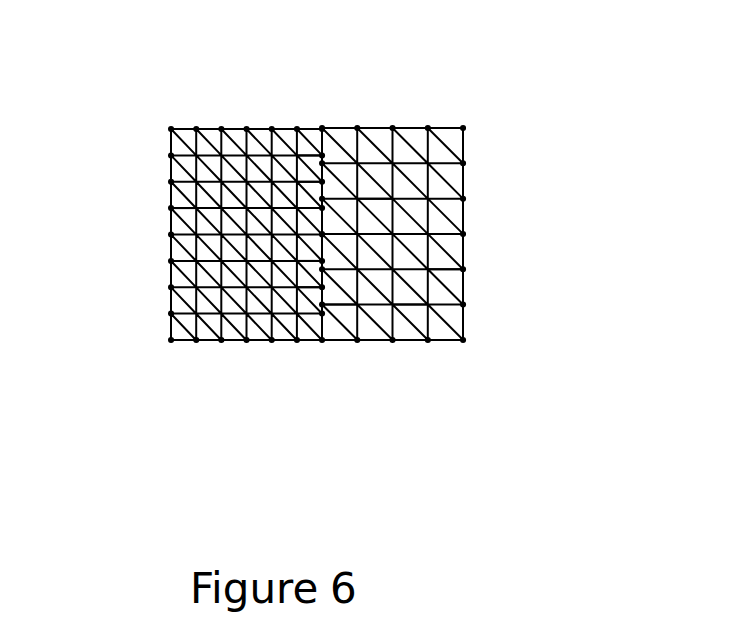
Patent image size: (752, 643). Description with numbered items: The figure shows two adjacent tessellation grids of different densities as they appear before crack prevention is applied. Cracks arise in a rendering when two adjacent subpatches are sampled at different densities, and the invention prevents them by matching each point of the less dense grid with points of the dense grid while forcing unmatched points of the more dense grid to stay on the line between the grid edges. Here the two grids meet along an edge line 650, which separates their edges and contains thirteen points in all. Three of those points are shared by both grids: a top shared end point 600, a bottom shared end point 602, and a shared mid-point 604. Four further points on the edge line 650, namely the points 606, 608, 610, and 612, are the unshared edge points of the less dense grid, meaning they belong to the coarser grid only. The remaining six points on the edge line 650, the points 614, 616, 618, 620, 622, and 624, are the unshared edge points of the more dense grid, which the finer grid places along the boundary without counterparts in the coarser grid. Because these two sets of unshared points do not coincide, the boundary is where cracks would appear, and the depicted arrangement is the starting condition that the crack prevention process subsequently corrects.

The top shared end point 600 is at (358, 128).
The bottom shared end point 602 is at (322, 340).
The shared mid-point 604 is at (393, 234).
The unshared edge point of the less dense grid 606 is at (463, 128).
The unshared edge point of the less dense grid 608 is at (358, 199).
The unshared edge point of the less dense grid 610 is at (428, 269).
The unshared edge point of the less dense grid 612 is at (393, 305).
The unshared edge point of the more dense grid 614 is at (320, 154).
The unshared edge point of the more dense grid 616 is at (297, 182).
The unshared edge point of the more dense grid 618 is at (172, 208).
The unshared edge point of the more dense grid 620 is at (322, 261).
The unshared edge point of the more dense grid 622 is at (322, 287).
The unshared edge point of the more dense grid 624 is at (322, 305).
The edge line 650 is at (323, 128).